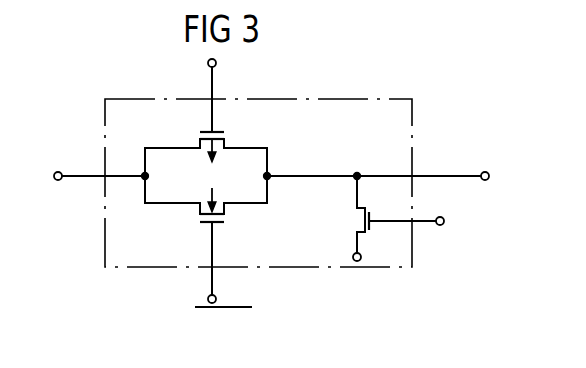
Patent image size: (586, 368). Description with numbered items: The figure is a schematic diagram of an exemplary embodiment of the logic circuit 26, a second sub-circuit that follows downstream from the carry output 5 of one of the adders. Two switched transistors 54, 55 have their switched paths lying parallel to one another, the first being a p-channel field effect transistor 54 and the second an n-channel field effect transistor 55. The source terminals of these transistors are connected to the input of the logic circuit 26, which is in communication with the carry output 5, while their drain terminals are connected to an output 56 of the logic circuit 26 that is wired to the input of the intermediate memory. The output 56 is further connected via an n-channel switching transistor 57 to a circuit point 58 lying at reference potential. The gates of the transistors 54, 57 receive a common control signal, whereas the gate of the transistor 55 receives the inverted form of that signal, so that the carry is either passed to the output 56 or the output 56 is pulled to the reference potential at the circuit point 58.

The carry output 5 is at (68, 173).
The logic circuit 26 is at (298, 267).
The p-channel field effect transistor 54 is at (236, 105).
The n-channel field effect transistor 55 is at (223, 263).
The output 56 is at (465, 177).
The n-channel switching transistor 57 is at (409, 220).
The circuit point 58 is at (367, 251).